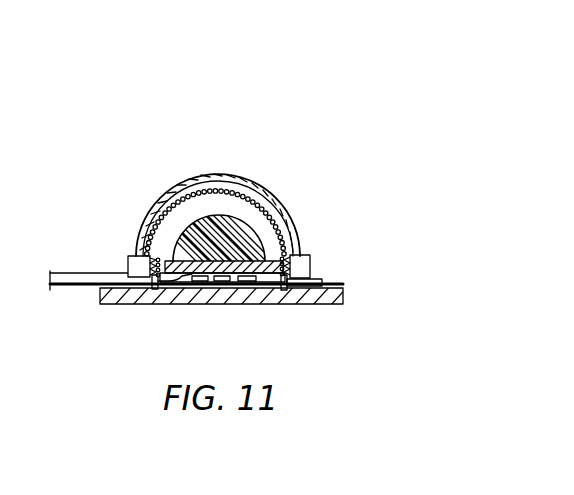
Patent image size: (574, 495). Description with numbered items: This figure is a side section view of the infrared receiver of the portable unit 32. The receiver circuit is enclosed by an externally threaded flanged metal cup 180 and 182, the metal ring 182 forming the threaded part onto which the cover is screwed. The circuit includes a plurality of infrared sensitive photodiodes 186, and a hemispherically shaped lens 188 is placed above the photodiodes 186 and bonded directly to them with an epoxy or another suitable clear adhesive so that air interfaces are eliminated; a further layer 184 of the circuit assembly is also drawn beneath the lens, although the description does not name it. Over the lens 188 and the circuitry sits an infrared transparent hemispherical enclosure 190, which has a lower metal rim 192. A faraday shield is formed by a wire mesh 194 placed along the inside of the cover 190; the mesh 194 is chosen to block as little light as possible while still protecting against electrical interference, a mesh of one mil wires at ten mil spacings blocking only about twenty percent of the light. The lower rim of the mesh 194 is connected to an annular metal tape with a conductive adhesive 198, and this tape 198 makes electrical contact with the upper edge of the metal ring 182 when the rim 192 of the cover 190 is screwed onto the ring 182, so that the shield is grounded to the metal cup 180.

The portable unit 32 is at (265, 177).
The flanged metal cup 180 is at (341, 306).
The metal ring 182 is at (268, 290).
The die attach layer 184 is at (250, 288).
The infrared sensitive photodiodes 186 is at (196, 288).
The hemispherically shaped lens 188 is at (203, 218).
The infrared transparent hemispherical enclosure 190 is at (152, 203).
The lower metal rim 192 is at (128, 258).
The wire mesh 194 is at (258, 202).
The annular metal tape with conductive adhesive 198 is at (301, 251).